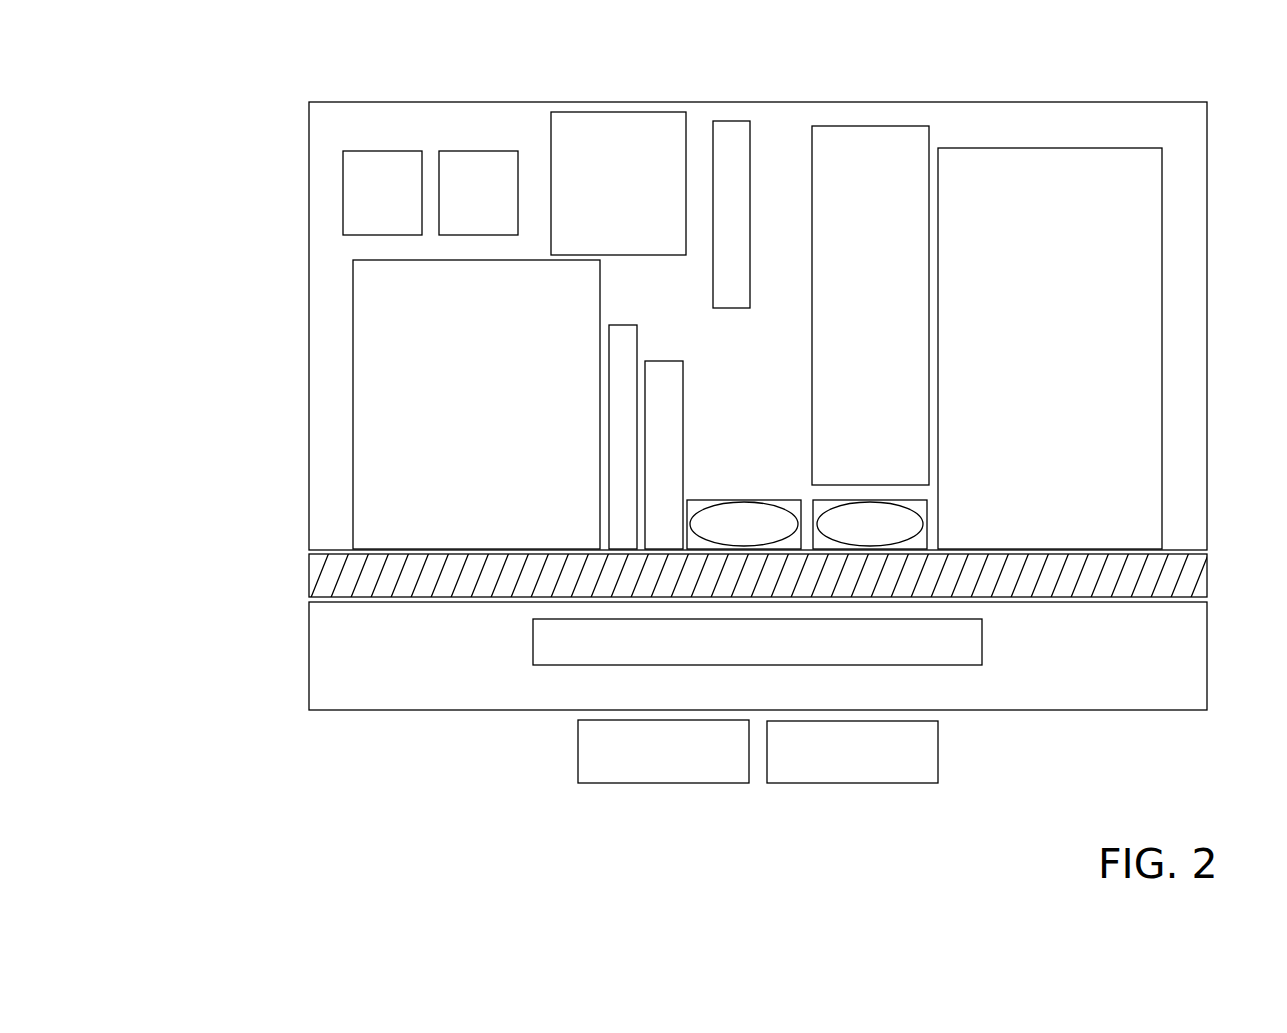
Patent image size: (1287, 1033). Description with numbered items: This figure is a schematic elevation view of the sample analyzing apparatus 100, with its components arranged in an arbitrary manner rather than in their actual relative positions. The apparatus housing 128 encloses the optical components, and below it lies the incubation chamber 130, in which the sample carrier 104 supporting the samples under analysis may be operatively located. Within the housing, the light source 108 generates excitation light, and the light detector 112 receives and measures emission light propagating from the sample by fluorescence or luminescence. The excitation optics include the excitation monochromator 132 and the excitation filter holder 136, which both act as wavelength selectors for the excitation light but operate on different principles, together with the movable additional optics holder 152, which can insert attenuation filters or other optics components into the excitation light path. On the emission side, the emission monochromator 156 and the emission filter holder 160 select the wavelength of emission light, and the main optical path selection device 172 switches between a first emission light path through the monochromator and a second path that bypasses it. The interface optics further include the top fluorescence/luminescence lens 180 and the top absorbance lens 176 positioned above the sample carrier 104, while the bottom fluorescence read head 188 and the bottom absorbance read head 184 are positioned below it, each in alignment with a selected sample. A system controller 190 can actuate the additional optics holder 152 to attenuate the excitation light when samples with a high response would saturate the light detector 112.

The sample analyzing apparatus 100 is at (243, 116).
The sample carrier 104 is at (982, 642).
The light source 108 is at (365, 204).
The light detector 112 is at (601, 198).
The apparatus housing 128 is at (1163, 103).
The incubation chamber 130 is at (308, 641).
The excitation monochromator 132 is at (459, 422).
The excitation filter holder 136 is at (683, 397).
The additional optics holder 152 is at (637, 343).
The emission monochromator 156 is at (1031, 374).
The emission filter holder 160 is at (750, 162).
The main optical path selection device 172 is at (851, 320).
The top absorbance lens 176 is at (923, 517).
The top fluorescence/luminescence lens 180 is at (730, 500).
The bottom absorbance read head 184 is at (885, 783).
The bottom fluorescence read head 188 is at (672, 783).
The system controller 190 is at (461, 204).